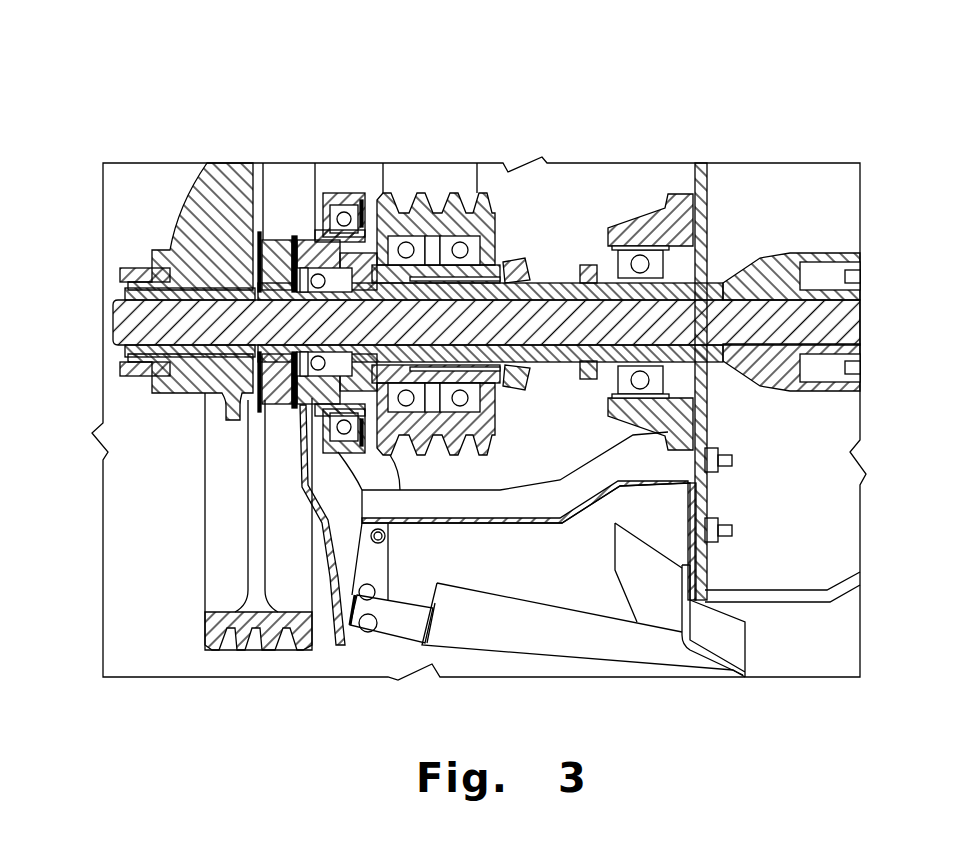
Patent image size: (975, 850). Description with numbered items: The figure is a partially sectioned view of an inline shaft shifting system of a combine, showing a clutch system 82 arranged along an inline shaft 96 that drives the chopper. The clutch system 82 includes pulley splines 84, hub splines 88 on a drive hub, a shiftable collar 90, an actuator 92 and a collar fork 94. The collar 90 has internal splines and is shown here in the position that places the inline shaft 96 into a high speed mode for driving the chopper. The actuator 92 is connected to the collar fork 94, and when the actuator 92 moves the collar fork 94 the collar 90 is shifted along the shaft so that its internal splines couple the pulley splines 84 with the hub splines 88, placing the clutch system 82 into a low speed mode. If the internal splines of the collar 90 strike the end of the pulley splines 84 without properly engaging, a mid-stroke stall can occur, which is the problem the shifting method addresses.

The clutch system 82 is at (250, 92).
The pulley splines 84 is at (284, 238).
The hub splines 88 is at (303, 238).
The collar 90 is at (349, 195).
The actuator 92 is at (510, 602).
The collar fork 94 is at (393, 555).
The inline shaft 96 is at (120, 322).